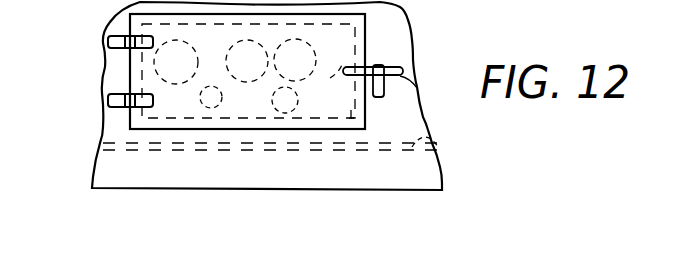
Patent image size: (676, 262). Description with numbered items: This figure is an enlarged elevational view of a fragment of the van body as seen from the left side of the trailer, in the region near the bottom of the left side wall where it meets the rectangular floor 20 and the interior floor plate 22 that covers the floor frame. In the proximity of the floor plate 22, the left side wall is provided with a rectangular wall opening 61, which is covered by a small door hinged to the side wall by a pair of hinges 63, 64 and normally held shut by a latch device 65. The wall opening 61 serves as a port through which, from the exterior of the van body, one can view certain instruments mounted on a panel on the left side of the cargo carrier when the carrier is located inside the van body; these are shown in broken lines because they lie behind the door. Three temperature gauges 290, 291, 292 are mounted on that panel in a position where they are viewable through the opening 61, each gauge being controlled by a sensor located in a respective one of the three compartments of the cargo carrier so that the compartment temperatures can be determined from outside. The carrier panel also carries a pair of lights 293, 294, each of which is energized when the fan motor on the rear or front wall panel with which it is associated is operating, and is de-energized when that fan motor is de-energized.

The rectangular floor 20 is at (438, 151).
The interior floor plate 22 is at (433, 140).
The rectangular wall opening 61 is at (367, 119).
The hinge 63 is at (110, 37).
The hinge 64 is at (105, 98).
The latch device 65 is at (424, 89).
The temperature gauge 290 is at (183, 41).
The temperature gauge 291 is at (253, 43).
The temperature gauge 292 is at (327, 37).
The light 293 is at (192, 99).
The light 294 is at (267, 100).